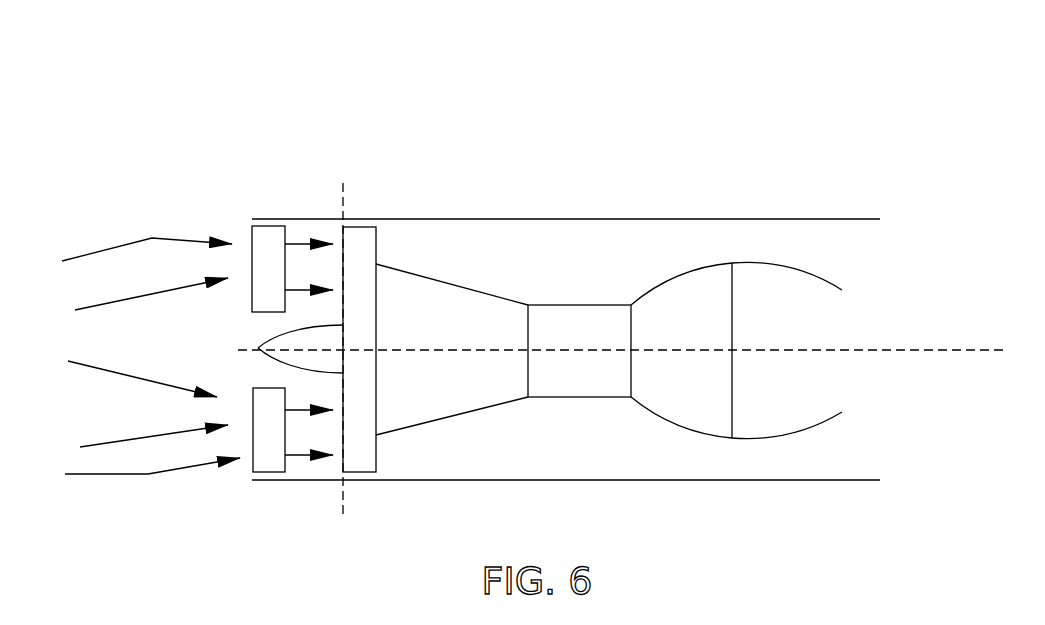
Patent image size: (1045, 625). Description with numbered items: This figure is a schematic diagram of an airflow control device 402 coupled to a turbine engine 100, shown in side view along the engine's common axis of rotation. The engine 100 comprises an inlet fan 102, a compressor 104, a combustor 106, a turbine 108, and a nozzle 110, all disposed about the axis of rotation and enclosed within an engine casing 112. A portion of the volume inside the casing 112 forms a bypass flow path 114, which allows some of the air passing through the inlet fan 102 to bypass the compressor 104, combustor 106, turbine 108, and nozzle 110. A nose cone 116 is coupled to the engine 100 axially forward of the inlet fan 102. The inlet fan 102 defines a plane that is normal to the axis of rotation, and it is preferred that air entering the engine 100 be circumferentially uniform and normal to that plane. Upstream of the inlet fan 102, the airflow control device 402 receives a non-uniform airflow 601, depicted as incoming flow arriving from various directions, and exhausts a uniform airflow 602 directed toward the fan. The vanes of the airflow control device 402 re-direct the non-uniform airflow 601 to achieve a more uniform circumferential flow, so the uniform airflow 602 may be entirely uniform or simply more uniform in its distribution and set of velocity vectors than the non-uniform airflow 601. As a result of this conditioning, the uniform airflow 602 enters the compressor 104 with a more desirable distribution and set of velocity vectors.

The turbine engine 100 is at (828, 107).
The inlet fan 102 is at (365, 240).
The compressor 104 is at (446, 323).
The combustor 106 is at (601, 332).
The turbine 108 is at (701, 327).
The nozzle 110 is at (773, 320).
The engine casing 112 is at (649, 219).
The bypass flow path 114 is at (590, 267).
The nose cone 116 is at (279, 356).
The airflow control device 402 is at (275, 232).
The non-uniform airflow 601 is at (130, 356).
The uniform airflow 602 is at (295, 457).